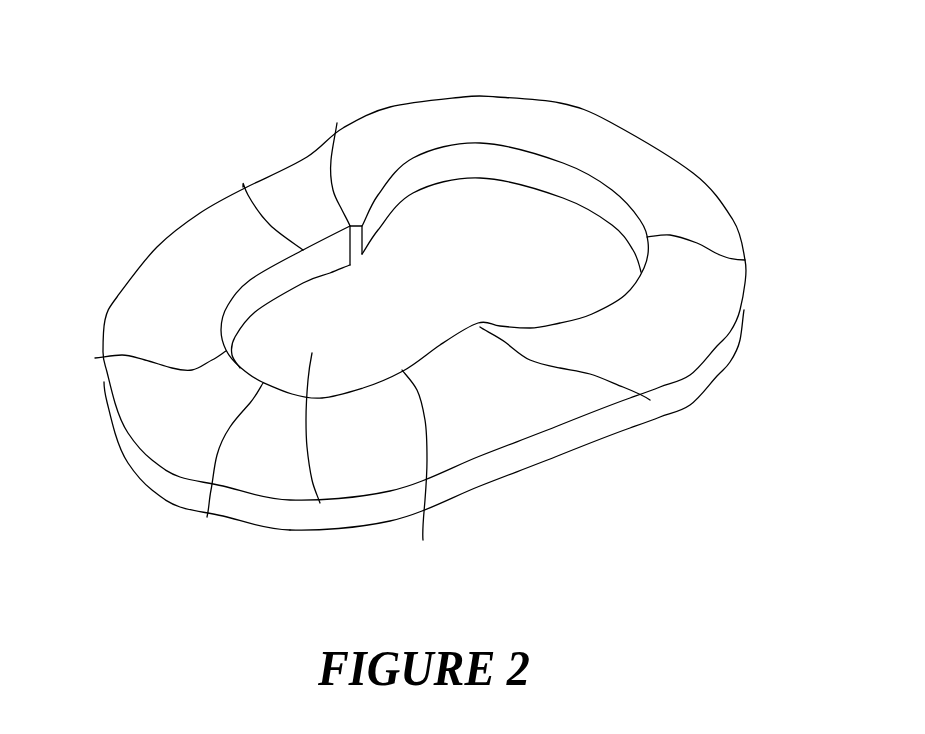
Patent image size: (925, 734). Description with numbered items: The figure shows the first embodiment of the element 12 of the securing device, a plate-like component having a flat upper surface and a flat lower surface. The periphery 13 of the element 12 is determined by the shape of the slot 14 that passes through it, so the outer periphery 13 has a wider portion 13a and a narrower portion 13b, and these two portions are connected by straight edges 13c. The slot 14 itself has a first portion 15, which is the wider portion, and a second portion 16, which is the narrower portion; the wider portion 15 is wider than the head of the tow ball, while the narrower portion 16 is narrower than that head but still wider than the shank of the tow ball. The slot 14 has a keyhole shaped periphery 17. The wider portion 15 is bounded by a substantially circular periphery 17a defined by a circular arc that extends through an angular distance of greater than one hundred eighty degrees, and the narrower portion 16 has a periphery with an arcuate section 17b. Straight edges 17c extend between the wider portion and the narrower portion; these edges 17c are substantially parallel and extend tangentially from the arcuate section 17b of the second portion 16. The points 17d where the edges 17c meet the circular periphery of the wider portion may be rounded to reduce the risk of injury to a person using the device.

The element 12 is at (92, 200).
The periphery 13 is at (510, 453).
The wider portion 13a is at (693, 175).
The narrower portion 13b is at (150, 461).
The straight edges 13c is at (282, 160).
The slot 14 is at (573, 227).
The first portion 15 is at (475, 203).
The second portion 16 is at (320, 503).
The keyhole shaped periphery 17 is at (207, 517).
The substantially circular periphery 17a is at (745, 260).
The arcuate section 17b is at (95, 358).
The straight edges 17c is at (243, 187).
The points 17d is at (337, 123).